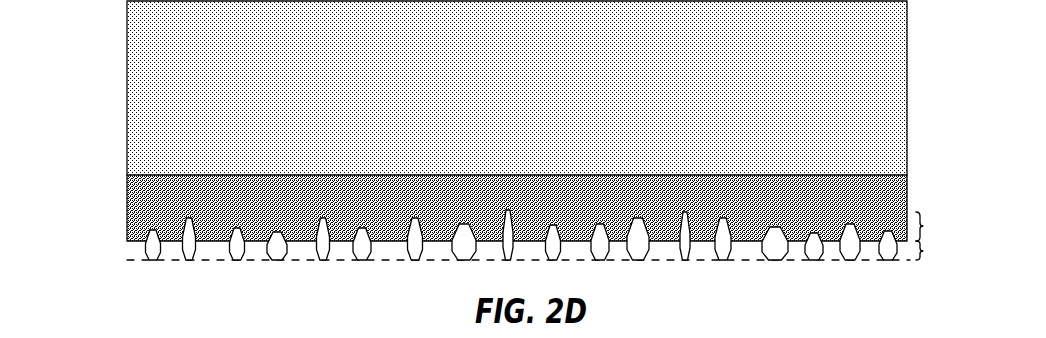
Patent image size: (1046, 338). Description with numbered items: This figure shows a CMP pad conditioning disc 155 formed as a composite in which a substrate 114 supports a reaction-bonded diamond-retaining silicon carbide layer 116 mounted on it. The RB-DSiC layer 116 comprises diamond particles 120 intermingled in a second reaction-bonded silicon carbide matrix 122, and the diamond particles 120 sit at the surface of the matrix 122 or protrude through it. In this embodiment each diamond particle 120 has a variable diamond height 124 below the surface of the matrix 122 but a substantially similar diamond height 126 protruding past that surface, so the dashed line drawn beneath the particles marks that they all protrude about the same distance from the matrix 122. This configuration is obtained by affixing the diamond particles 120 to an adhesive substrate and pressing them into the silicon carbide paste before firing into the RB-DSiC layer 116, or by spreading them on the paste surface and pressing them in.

The CMP pad conditioning disc 155 is at (116, 80).
The substrate 114 is at (148, 147).
The reaction-bonded diamond-retaining silicon carbide (RB-DSiC) layer 116 is at (126, 192).
The second reaction-bonded silicon carbide matrix 122 is at (127, 224).
The diamond height below the surface 124 is at (937, 226).
The diamond height protruding past the surface 126 is at (542, 252).
The diamond particles 120 is at (330, 258).